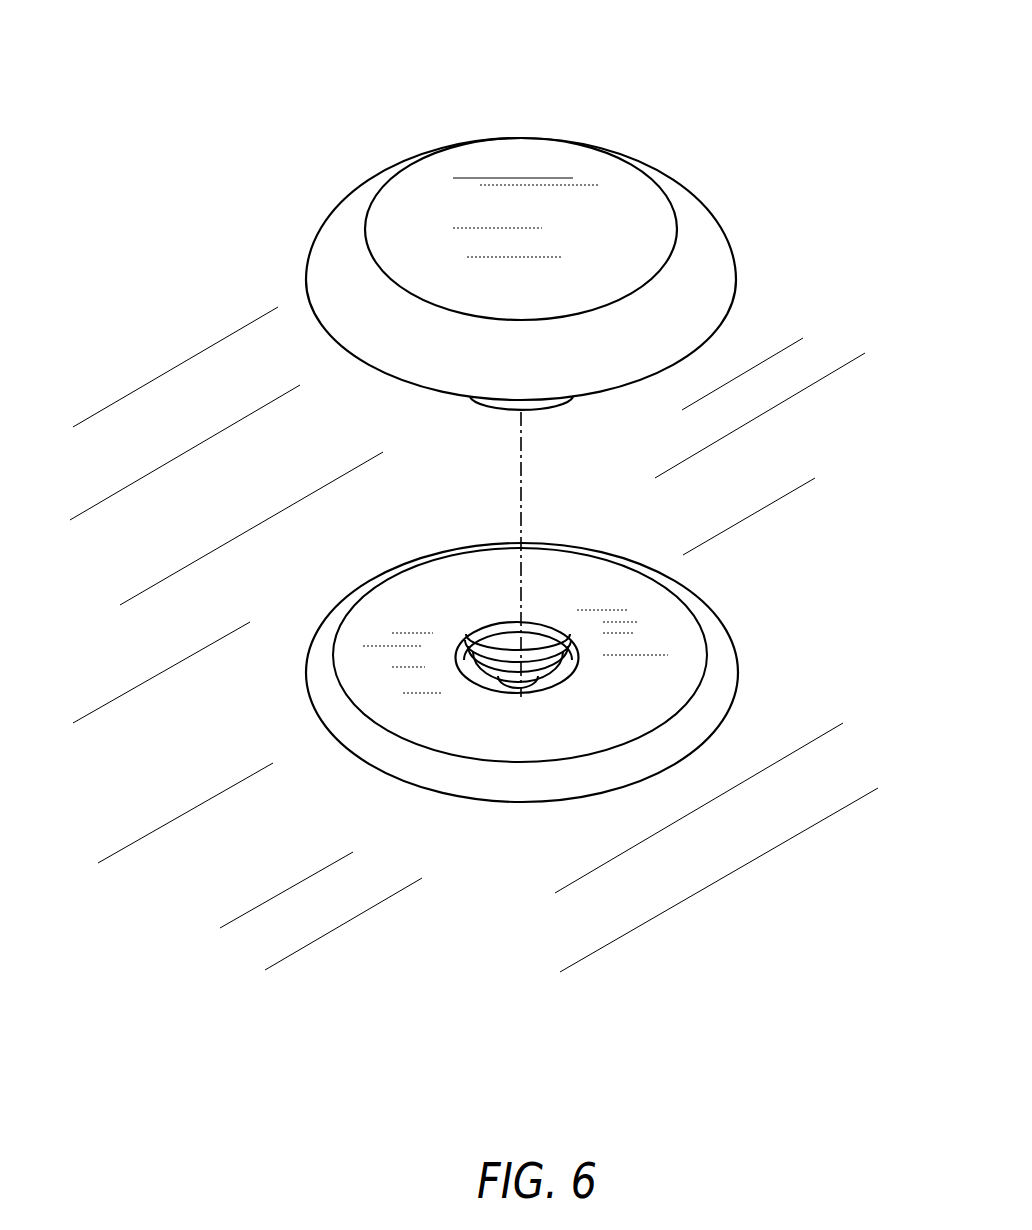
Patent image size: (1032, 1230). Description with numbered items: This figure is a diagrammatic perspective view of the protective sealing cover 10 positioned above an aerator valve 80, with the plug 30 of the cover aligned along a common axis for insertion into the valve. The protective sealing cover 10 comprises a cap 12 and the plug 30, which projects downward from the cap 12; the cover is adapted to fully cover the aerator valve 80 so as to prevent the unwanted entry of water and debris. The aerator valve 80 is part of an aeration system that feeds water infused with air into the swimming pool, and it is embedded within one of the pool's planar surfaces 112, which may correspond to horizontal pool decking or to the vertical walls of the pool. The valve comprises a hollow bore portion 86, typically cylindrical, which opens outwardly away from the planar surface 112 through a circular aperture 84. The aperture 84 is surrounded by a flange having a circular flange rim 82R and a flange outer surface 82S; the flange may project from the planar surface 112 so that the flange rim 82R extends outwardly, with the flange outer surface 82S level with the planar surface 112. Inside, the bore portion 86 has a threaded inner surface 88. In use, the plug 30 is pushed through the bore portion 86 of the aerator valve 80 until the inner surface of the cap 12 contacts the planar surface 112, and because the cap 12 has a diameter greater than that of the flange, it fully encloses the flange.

The protective sealing cover 10 is at (781, 85).
The cap 12 is at (619, 150).
The plug 30 is at (553, 407).
The aerator valve 80 is at (717, 582).
The flange rim 82R is at (723, 718).
The flange outer surface 82S is at (520, 655).
The aperture 84 is at (565, 630).
The bore portion 86 is at (534, 657).
The threaded inner surface 88 is at (493, 642).
The planar surface 112 is at (474, 639).